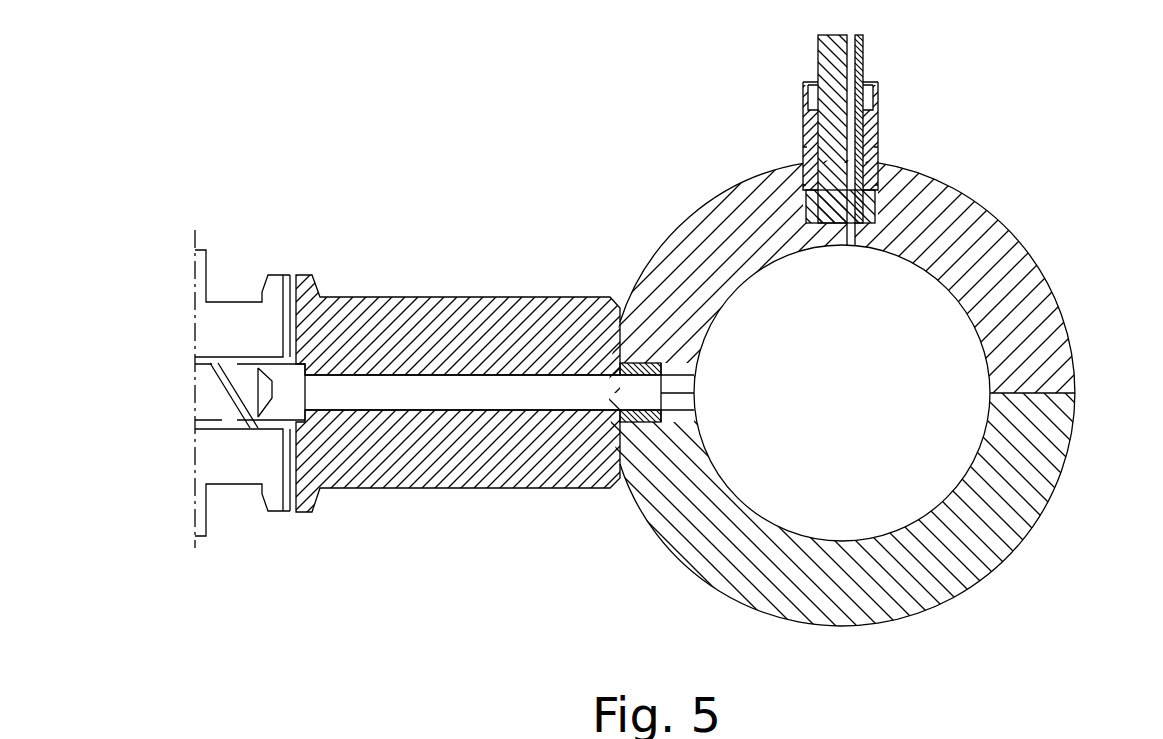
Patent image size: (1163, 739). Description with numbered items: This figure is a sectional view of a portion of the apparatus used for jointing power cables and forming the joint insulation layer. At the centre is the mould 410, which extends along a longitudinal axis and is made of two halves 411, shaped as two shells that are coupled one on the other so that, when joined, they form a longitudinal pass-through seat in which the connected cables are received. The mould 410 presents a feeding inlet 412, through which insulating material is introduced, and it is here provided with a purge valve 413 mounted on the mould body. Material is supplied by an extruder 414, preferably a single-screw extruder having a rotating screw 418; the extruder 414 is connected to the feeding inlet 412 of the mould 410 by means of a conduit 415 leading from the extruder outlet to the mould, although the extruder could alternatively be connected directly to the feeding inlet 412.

The mould 410 is at (730, 313).
The halves of the mould 411 is at (1015, 292).
The feeding inlet 412 is at (688, 396).
The purge valve 413 is at (863, 57).
The extruder 414 is at (217, 458).
The conduit 415 is at (348, 297).
The rotating screw 418 is at (217, 398).